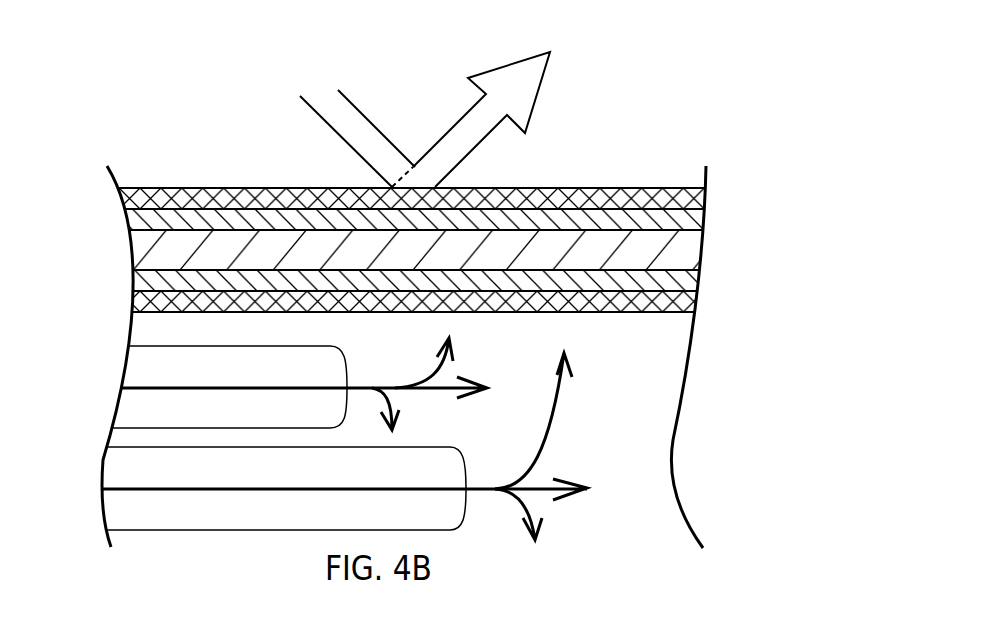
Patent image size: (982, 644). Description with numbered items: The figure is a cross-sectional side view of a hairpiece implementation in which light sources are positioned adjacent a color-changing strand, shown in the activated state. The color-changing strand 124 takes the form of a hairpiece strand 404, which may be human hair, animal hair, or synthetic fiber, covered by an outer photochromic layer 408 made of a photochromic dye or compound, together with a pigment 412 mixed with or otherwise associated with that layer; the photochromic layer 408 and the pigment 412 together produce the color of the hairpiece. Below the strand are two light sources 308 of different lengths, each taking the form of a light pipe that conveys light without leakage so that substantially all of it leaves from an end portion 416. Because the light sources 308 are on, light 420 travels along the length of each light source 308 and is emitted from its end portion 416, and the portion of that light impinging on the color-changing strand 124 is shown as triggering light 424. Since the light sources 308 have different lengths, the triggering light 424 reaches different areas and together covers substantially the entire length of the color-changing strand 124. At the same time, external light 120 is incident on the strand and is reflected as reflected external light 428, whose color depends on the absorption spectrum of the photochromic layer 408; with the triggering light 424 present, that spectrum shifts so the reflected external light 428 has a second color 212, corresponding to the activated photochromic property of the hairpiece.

The external light 120 is at (358, 112).
The second color 212 is at (523, 105).
The reflected external light 428 is at (545, 90).
The color-changing strand 124 is at (148, 253).
The pigment 412 is at (703, 193).
The photochromic layer 408 is at (703, 218).
The hairpiece strand 404 is at (686, 252).
The light source 308 is at (267, 426).
The end portion 416 is at (347, 363).
The light 420 is at (253, 387).
The triggering light 424 is at (437, 367).